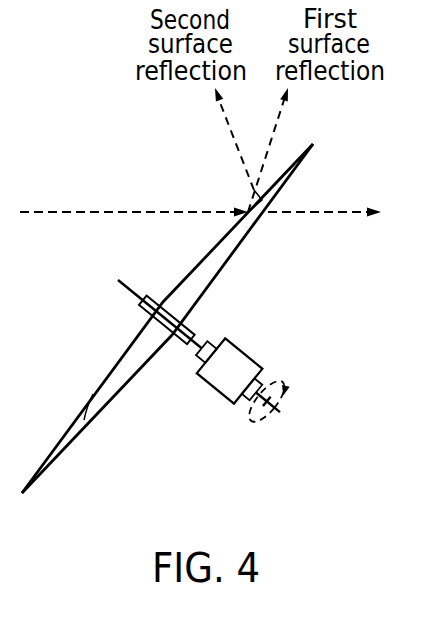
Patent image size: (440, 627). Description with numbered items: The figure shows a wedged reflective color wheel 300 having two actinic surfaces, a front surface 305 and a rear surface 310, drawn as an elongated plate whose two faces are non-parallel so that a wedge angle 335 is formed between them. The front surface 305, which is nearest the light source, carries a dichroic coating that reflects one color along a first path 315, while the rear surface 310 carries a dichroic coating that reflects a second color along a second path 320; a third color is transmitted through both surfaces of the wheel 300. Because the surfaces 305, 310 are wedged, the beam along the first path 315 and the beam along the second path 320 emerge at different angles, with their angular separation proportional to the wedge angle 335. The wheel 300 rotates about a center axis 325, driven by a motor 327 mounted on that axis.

The reflective color wheel 300 is at (166, 318).
The front surface 305 is at (205, 255).
The rear surface 310 is at (233, 257).
The first path 315 is at (276, 135).
The second path 320 is at (236, 144).
The center axis 325 is at (262, 417).
The motor 327 is at (217, 382).
The wedge angle 335 is at (93, 394).